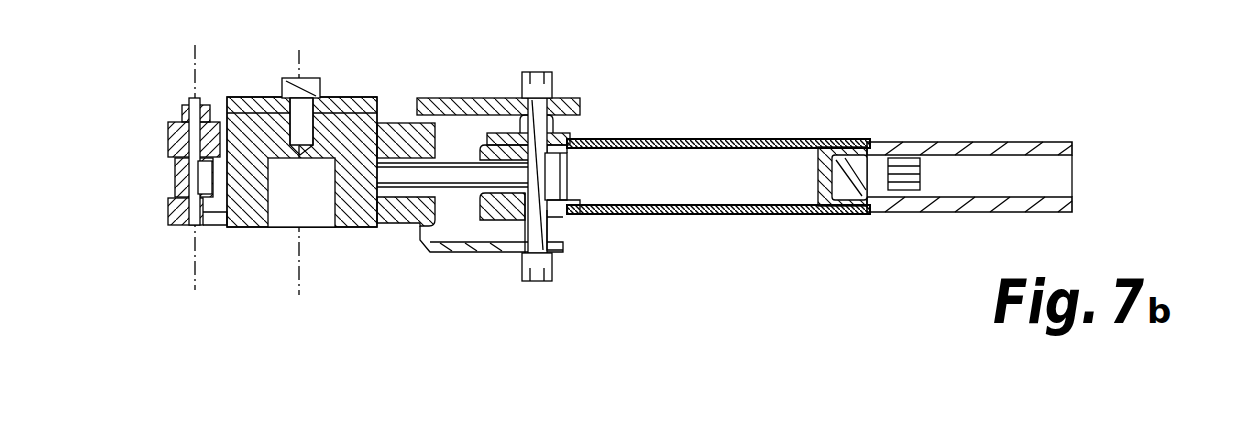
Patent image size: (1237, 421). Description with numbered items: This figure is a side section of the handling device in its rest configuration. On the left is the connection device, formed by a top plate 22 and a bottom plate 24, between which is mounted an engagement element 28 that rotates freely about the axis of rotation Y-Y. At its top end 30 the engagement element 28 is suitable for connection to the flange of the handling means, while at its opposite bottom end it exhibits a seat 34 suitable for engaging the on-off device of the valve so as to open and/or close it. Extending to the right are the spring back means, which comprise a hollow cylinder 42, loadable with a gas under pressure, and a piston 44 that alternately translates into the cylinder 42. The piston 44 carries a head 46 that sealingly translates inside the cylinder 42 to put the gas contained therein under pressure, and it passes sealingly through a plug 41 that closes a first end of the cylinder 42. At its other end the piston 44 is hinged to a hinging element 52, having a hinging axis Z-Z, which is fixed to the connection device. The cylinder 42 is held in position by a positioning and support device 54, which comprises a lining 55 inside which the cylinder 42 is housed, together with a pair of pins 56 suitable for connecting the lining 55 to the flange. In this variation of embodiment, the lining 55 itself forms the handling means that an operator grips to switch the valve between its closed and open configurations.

The top plate 22 is at (400, 130).
The bottom plate 24 is at (386, 228).
The engagement element 28 is at (250, 128).
The top end 30 is at (342, 84).
The seat 34 is at (262, 228).
The plug 41 is at (500, 222).
The hollow cylinder 42 is at (703, 215).
The piston 44 is at (450, 215).
The head 46 is at (572, 178).
The hinging element 52 is at (182, 108).
The positioning and support device 54 is at (556, 62).
The lining 55 is at (848, 138).
The pins 56 is at (530, 76).